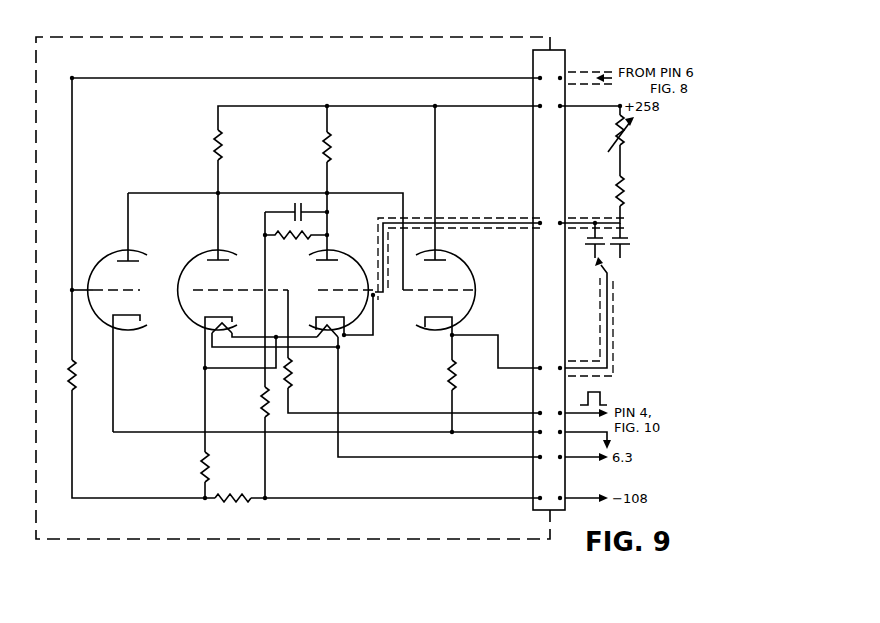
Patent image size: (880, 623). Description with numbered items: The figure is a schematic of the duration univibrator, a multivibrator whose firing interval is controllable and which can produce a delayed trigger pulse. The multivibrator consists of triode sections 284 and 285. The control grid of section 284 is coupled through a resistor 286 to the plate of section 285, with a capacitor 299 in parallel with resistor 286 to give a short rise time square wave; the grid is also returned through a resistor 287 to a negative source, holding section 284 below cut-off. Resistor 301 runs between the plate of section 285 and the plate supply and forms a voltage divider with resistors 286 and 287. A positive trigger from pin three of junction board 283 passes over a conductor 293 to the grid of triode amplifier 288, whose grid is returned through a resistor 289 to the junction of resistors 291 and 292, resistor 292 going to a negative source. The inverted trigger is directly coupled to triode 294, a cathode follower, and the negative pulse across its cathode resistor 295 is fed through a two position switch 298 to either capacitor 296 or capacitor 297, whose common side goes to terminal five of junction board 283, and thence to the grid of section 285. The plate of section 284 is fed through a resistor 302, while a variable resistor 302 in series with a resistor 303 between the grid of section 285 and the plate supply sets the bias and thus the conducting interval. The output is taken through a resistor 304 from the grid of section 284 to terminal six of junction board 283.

The junction board 283 is at (552, 48).
The triode section 284 is at (208, 254).
The triode section 285 is at (343, 255).
The resistor 286 is at (298, 240).
The resistor 287 is at (263, 405).
The triode amplifier 288 is at (115, 252).
The resistor 289 is at (70, 385).
The resistor 291 is at (202, 463).
The resistor 292 is at (234, 493).
The conductor 293 is at (226, 78).
The triode 294 is at (477, 270).
The resistor 295 is at (449, 380).
The capacitor 296 is at (594, 250).
The capacitor 297 is at (625, 250).
The two position switch 298 is at (605, 272).
The capacitor 299 is at (297, 203).
The resistor 301 is at (332, 140).
The variable resistor 302 is at (213, 143).
The resistor 303 is at (626, 194).
The resistor 304 is at (292, 373).